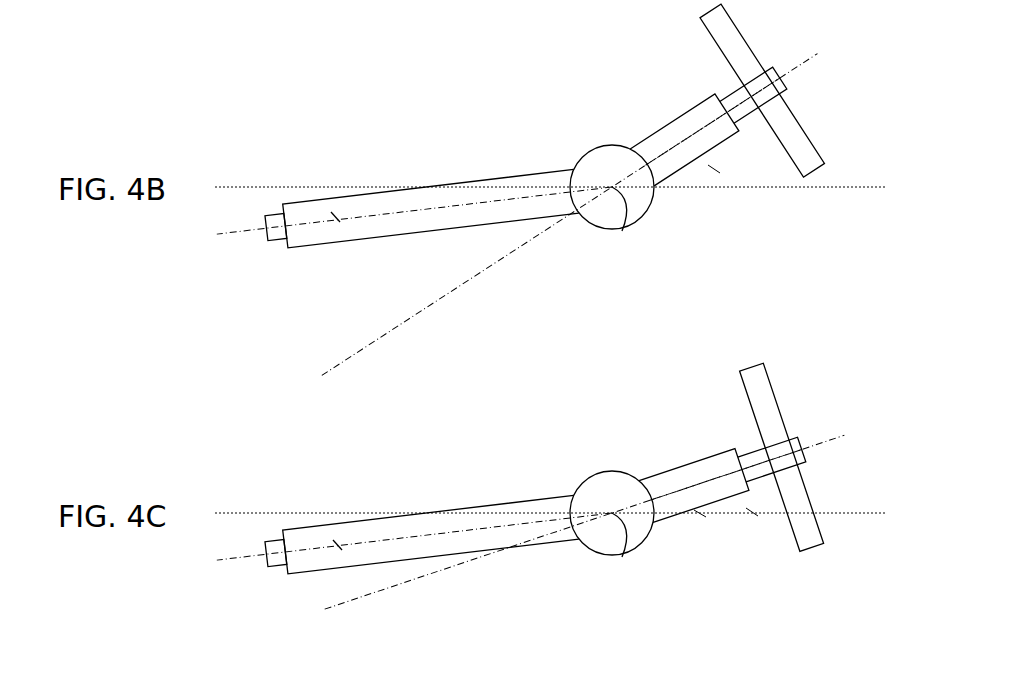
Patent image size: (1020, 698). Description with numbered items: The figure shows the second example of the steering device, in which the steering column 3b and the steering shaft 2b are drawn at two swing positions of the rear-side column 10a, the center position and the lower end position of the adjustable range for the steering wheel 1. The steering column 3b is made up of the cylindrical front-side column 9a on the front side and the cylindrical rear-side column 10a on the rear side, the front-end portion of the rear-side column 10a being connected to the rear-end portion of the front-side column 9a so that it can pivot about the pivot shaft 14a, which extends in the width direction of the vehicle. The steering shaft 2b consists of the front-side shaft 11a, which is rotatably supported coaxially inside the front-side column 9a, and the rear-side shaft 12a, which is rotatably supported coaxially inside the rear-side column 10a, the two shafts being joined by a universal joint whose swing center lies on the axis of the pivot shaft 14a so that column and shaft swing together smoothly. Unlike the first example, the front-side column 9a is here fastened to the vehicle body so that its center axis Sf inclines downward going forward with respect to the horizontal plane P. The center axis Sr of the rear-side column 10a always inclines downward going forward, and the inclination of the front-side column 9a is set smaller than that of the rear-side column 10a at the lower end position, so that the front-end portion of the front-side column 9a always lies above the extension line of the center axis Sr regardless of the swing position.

In FIG. 4B, the steering wheel 1 is at (775, 68).
In FIG. 4C, the steering wheel 1 is at (775, 380).
In FIG. 4B, the steering shaft 2b is at (778, 107).
In FIG. 4C, the steering shaft 2b is at (787, 487).
In FIG. 4B, the steering column 3b is at (490, 187).
In FIG. 4C, the steering column 3b is at (473, 515).
In FIG. 4B, the front-side column 9a is at (395, 195).
In FIG. 4C, the front-side column 9a is at (405, 513).
In FIG. 4B, the rear-side column 10a is at (670, 135).
In FIG. 4C, the rear-side column 10a is at (697, 458).
In FIG. 4B, the front-side shaft 11a is at (282, 203).
In FIG. 4C, the front-side shaft 11a is at (282, 537).
In FIG. 4B, the rear-side shaft 12a is at (740, 67).
In FIG. 4C, the rear-side shaft 12a is at (753, 427).
In FIG. 4B, the pivot shaft 14a is at (616, 231).
In FIG. 4C, the pivot shaft 14a is at (623, 556).
In FIG. 4B, the horizontal plane P is at (865, 187).
In FIG. 4C, the horizontal plane P is at (865, 513).
In FIG. 4B, the center axis of the front-side column Sf is at (377, 237).
In FIG. 4C, the center axis of the front-side column Sf is at (428, 545).
In FIG. 4B, the center axis of the rear-side column Sr is at (713, 123).
In FIG. 4C, the center axis of the rear-side column Sr is at (720, 477).